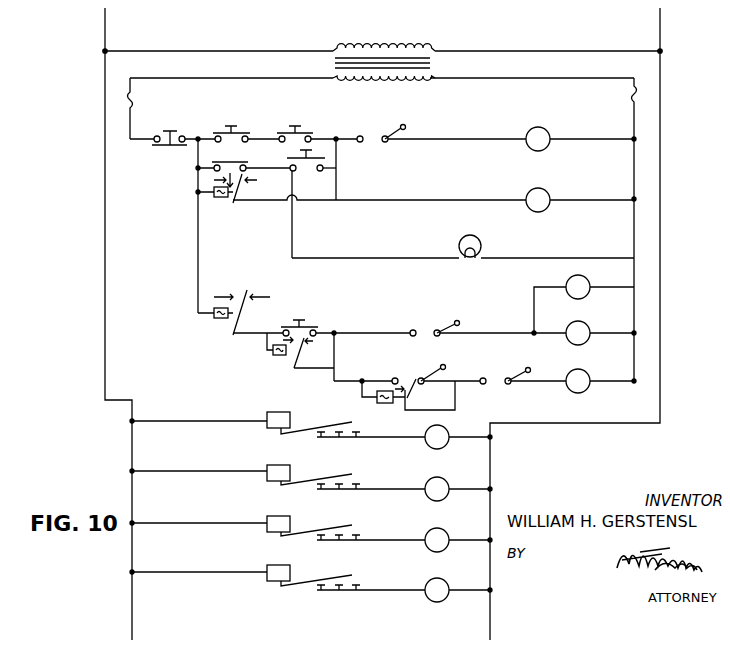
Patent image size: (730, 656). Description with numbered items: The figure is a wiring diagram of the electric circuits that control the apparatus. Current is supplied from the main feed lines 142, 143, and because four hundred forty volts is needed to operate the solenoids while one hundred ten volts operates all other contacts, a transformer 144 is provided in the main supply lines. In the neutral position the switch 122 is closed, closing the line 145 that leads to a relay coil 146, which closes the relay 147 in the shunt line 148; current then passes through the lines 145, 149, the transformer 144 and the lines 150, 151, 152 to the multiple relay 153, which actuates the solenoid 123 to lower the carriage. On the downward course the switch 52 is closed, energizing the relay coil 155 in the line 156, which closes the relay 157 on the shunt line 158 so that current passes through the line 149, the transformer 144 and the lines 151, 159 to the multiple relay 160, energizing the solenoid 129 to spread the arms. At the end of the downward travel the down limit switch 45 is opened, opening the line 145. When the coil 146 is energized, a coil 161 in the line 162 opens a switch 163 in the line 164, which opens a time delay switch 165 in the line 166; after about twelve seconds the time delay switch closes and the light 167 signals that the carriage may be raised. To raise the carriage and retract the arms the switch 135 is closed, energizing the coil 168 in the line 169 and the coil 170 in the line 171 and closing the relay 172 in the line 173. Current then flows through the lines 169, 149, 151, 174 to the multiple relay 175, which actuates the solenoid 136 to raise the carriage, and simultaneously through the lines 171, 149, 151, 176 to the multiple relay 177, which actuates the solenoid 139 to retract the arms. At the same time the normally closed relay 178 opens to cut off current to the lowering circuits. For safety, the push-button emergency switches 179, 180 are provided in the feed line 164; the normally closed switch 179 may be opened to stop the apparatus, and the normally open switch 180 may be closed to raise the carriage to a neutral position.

The main feed line 142 is at (104, 35).
The main feed line 143 is at (661, 34).
The transformer 144 is at (441, 47).
The line 149 is at (661, 218).
The line 150 is at (238, 39).
The line 151 is at (104, 343).
The line 164 is at (143, 138).
The emergency switch 179 is at (177, 133).
The switch 163 is at (236, 131).
The emergency switch 180 is at (300, 131).
The line 169 is at (460, 139).
The coil 168 is at (546, 134).
The time delay switch 165 is at (222, 163).
The switch 135 is at (312, 154).
The line 173 is at (215, 197).
The relay 172 is at (238, 205).
The line 171 is at (446, 199).
The coil 170 is at (549, 196).
The line 166 is at (350, 258).
The light 167 is at (481, 244).
The normally closed relay 178 is at (242, 311).
The switch 122 is at (313, 327).
The down limit switch 45 is at (419, 323).
The line 145 is at (476, 333).
The relay coil 146 is at (586, 331).
The line 162 is at (538, 284).
The coil 161 is at (582, 282).
The relay 147 is at (296, 351).
The shunt line 148 is at (267, 352).
The switch 52 is at (421, 368).
The line 156 is at (545, 375).
The relay coil 155 is at (585, 374).
The relay 157 is at (407, 397).
The shunt line 158 is at (375, 404).
The line 174 is at (166, 421).
The multiple relay 175 is at (267, 412).
The solenoid 136 is at (446, 435).
The line 152 is at (152, 470).
The multiple relay 153 is at (279, 466).
The solenoid 123 is at (440, 489).
The line 176 is at (152, 522).
The multiple relay 177 is at (279, 517).
The solenoid 139 is at (436, 537).
The line 159 is at (152, 571).
The multiple relay 160 is at (273, 566).
The solenoid 129 is at (431, 596).